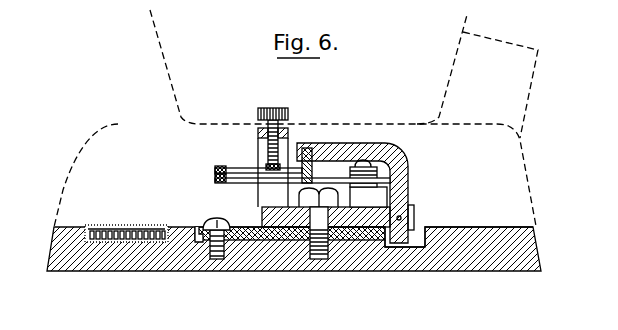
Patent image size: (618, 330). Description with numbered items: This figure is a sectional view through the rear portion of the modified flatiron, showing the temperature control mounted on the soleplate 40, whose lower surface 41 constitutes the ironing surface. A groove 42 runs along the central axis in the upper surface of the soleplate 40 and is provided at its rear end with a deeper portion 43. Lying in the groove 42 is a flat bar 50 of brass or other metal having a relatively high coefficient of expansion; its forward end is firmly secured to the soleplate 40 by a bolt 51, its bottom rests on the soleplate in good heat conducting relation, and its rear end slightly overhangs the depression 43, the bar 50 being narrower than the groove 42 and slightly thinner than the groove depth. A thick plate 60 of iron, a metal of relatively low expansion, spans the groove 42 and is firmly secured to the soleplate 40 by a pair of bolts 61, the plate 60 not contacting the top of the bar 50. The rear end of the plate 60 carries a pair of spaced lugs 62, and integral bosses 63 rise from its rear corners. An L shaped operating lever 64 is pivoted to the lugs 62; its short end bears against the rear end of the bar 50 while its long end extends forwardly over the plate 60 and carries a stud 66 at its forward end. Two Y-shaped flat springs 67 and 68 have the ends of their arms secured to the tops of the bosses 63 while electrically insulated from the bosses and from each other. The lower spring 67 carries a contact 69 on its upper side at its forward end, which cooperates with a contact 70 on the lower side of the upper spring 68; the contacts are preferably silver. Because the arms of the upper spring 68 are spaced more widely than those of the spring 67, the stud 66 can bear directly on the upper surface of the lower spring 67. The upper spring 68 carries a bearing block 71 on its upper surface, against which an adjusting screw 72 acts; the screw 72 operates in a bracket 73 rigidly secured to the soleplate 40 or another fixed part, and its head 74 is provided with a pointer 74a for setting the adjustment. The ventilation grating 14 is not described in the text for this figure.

The ventilation grating 14 is at (108, 231).
The soleplate 40 is at (93, 258).
The ironing surface 41 is at (140, 260).
The groove 42 is at (199, 241).
The deeper portion 43 is at (418, 248).
The flat bar 50 is at (258, 241).
The bolt 51 is at (217, 260).
The plate 60 is at (262, 213).
The bolts 61 is at (319, 259).
The lugs 62 is at (401, 218).
The bosses 63 is at (380, 196).
The L shaped operating lever 64 is at (395, 158).
The stud 66 is at (308, 148).
The lower Y-shaped flat spring 67 is at (226, 183).
The upper Y-shaped flat spring 68 is at (223, 170).
The contact 69 is at (217, 181).
The contact 70 is at (217, 172).
The bearing block 71 is at (281, 167).
The adjusting screw 72 is at (270, 154).
The bracket 73 is at (258, 132).
The head 74 is at (271, 150).
The pointer 74a is at (259, 118).